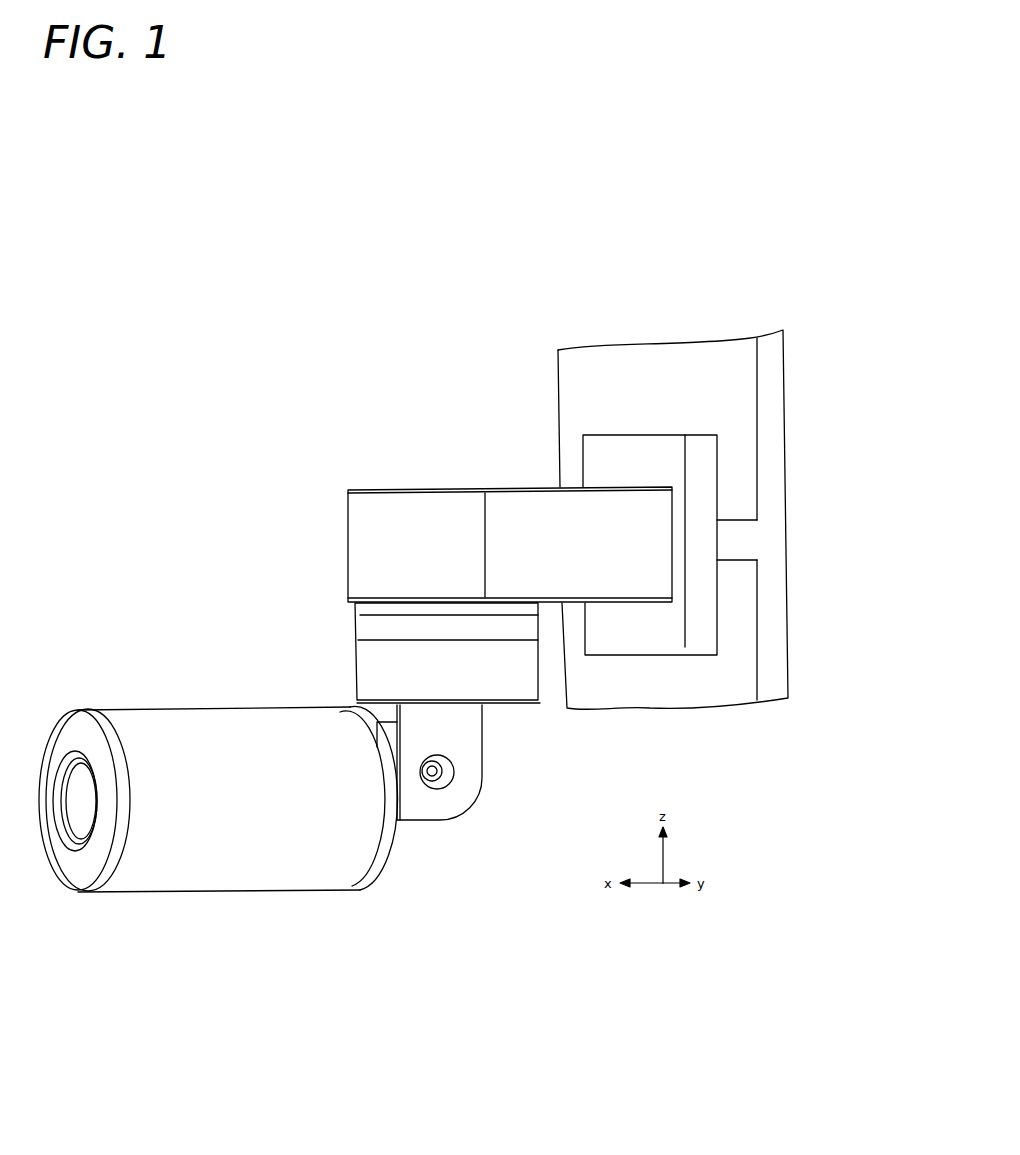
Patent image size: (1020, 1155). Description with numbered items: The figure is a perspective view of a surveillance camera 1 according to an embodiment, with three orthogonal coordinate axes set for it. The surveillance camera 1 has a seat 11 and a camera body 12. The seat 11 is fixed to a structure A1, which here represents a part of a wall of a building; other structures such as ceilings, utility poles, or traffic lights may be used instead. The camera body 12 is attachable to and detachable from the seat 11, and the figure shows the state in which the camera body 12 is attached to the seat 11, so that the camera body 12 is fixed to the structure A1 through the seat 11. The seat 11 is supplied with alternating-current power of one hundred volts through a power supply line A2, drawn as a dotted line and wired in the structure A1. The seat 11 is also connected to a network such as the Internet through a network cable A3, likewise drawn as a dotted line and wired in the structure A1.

The surveillance camera 1 is at (430, 273).
The seat 11 is at (343, 458).
The camera body 12 is at (50, 905).
The structure A1 is at (620, 341).
The power supply line A2 is at (757, 455).
The network cable A3 is at (757, 643).